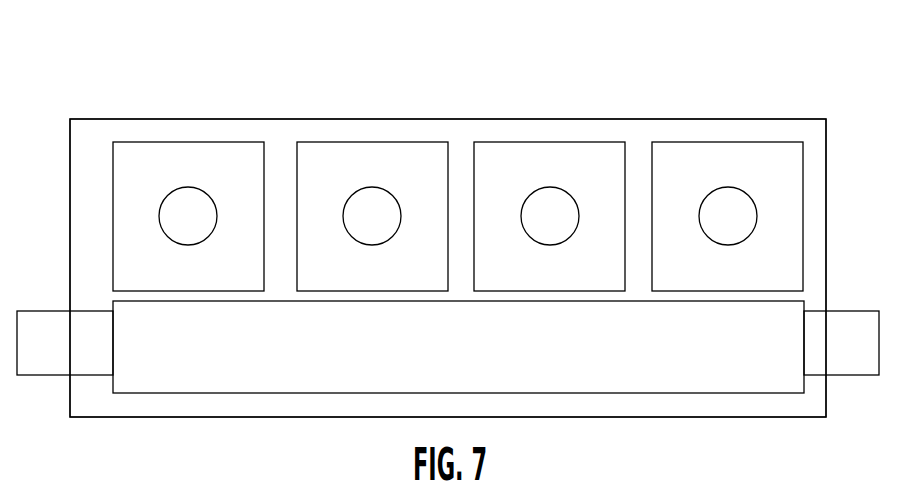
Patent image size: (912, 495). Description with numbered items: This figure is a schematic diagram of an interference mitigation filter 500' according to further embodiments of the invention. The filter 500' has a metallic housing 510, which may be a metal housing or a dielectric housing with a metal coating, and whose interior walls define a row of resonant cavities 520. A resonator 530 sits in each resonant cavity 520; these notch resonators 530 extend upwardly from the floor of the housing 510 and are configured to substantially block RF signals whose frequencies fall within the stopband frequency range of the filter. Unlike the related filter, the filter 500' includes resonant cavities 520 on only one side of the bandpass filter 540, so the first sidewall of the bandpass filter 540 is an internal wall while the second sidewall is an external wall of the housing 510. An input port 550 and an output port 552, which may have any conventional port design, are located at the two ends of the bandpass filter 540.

The interference mitigation filter 500' is at (448, 223).
The housing 510 is at (735, 128).
The resonant cavities 520 is at (323, 152).
The resonators 530 is at (554, 197).
The bandpass filter 540 is at (476, 355).
The input port 550 is at (37, 322).
The output port 552 is at (855, 322).